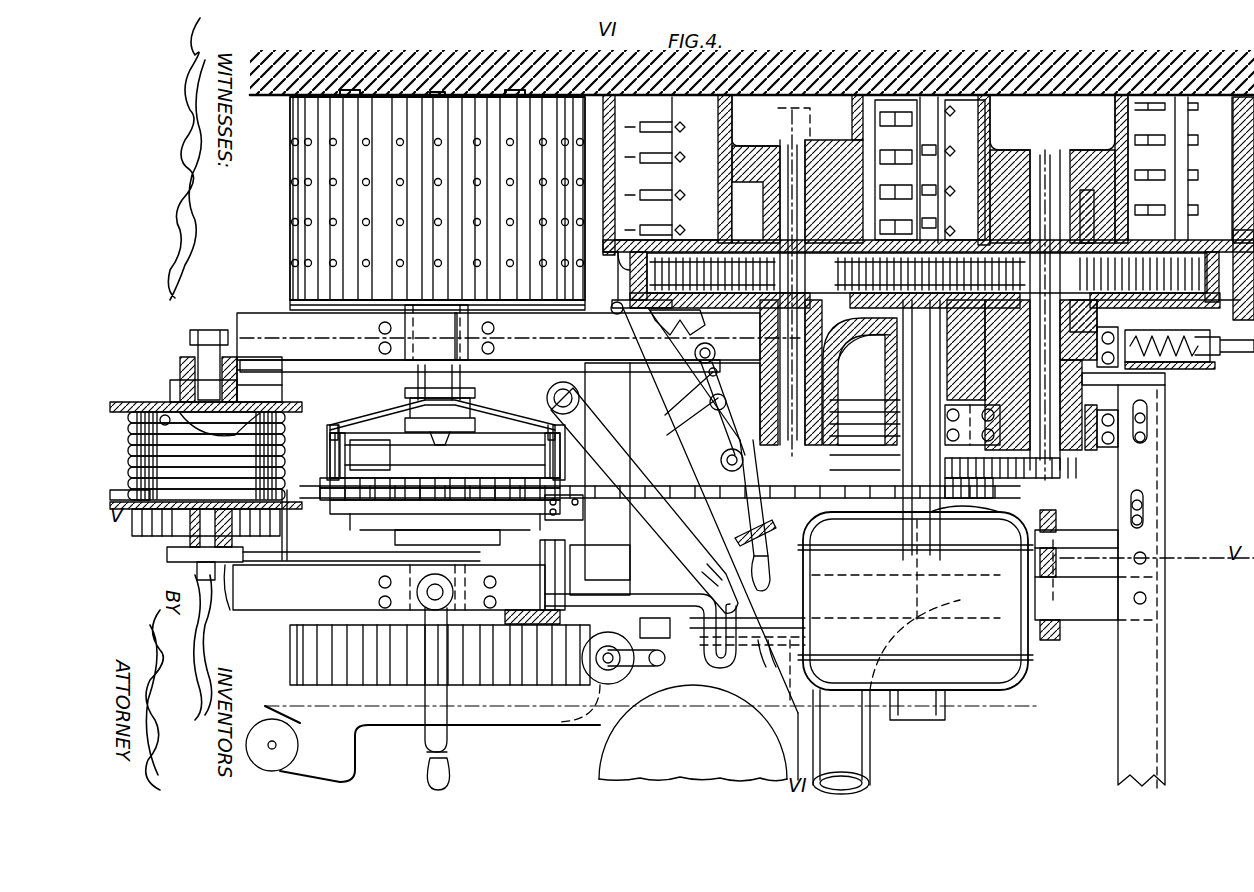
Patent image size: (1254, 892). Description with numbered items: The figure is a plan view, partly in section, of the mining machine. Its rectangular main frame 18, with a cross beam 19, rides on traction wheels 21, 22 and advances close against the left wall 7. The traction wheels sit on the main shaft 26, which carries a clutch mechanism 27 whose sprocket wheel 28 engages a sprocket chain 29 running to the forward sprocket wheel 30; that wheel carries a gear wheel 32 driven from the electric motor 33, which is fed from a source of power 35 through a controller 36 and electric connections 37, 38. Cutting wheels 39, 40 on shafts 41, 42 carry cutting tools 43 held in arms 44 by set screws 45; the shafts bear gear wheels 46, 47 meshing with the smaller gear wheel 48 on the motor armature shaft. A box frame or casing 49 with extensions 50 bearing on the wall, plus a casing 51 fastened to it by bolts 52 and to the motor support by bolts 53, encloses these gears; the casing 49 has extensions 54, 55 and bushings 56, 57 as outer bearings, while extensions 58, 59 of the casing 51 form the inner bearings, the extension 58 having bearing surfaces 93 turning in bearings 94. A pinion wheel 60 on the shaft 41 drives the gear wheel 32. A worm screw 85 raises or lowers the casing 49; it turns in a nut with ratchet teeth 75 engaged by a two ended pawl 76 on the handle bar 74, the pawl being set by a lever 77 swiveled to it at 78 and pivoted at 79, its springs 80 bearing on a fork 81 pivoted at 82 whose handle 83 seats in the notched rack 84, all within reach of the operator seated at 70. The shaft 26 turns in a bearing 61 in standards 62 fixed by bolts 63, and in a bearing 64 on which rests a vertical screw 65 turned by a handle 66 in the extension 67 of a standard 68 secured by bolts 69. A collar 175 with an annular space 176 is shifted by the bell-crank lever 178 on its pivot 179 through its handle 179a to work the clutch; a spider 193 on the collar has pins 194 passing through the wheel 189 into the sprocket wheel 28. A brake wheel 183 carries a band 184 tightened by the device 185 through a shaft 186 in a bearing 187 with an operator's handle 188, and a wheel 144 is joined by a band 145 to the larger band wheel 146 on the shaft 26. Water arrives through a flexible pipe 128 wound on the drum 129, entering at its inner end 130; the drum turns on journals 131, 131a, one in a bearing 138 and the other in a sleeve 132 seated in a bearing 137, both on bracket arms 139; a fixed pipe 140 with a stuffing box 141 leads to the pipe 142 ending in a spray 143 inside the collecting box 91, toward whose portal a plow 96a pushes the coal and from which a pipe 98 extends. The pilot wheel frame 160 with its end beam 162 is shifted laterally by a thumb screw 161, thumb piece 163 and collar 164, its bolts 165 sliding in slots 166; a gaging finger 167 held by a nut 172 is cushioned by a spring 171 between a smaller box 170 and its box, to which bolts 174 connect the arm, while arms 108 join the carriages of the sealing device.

The left wall 7 is at (518, 88).
The extension 50 is at (605, 100).
The box frame or casing 49 is at (630, 272).
The worm screw 85 is at (927, 273).
The bolts 174 is at (1149, 277).
The cutting tools 43 is at (900, 100).
The set screws 45 is at (948, 110).
The arms 44 is at (1202, 124).
The gear wheel 47 is at (705, 243).
The smaller gear wheel 48 is at (945, 243).
The cutting wheel 40 is at (749, 169).
The shaft 42 is at (795, 150).
The bushing 57 is at (775, 190).
The extension 55 is at (745, 218).
The spray 143 is at (893, 170).
The plow 96a is at (850, 110).
The cutting wheel 39 is at (1115, 116).
The shaft 41 is at (1040, 150).
The gear wheel 46 is at (1150, 260).
The bushing 56 is at (1078, 196).
The extension 54 is at (1078, 218).
The extension 58 is at (1135, 378).
The smaller box 170 is at (1210, 365).
The spring 171 is at (1123, 381).
The gaging finger 167 is at (1229, 403).
The laterally extending arms 108 is at (1150, 740).
The bolts 165 is at (1150, 420).
The slots 166 is at (1150, 440).
The bearing surfaces 93 is at (1115, 445).
The bearings 94 is at (1110, 450).
The gear wheel 32 is at (1000, 482).
The pinion wheel 60 is at (1065, 488).
The extension 59 is at (749, 383).
The bolts 53 is at (828, 372).
The collecting box 91 is at (865, 436).
The fork 81 is at (770, 470).
The casing 51 is at (620, 300).
The ratchet teeth 75 is at (655, 340).
The bolts 52 is at (655, 330).
The bearing 61 is at (650, 315).
The bolts 63 is at (360, 338).
The standards 62 is at (449, 332).
The pipe 142 is at (295, 318).
The main shaft 26 is at (470, 370).
The pipe 140 is at (205, 332).
The stuffing box 141 is at (185, 360).
The journal 131 is at (180, 365).
The drum 129 is at (175, 398).
The bearing 138 is at (265, 358).
The inner end 130 is at (210, 426).
The flexible pipe 128 is at (206, 456).
The bearing 137 is at (167, 552).
The sleeve 132 is at (197, 568).
The journal 131a is at (230, 575).
The bracket arms 139 is at (275, 562).
The wheel 144 is at (270, 612).
The standard 68 is at (378, 586).
The bolts 69 is at (378, 600).
The upper vertical extension 67 is at (420, 598).
The vertical screw 65 is at (428, 605).
The handle 66 is at (428, 762).
The bearing 64 is at (475, 628).
The traction wheel 22 is at (310, 658).
The source of power 35 is at (285, 750).
The electric connections 37 is at (500, 730).
The controller 36 is at (600, 690).
The operator's handle 188 is at (675, 624).
The shaft 186 is at (545, 585).
The bearing 187 is at (600, 570).
The tightening device 185 is at (585, 512).
The larger band wheel 146 is at (465, 557).
The band 145 is at (300, 557).
The brake wheel 183 is at (335, 512).
The band 184 is at (440, 499).
The wheel 189 is at (445, 455).
The pins 194 is at (370, 455).
The clutch mechanism 27 is at (330, 455).
The sprocket wheel 28 is at (560, 468).
The collar 175 is at (415, 380).
The central annular space 176 is at (400, 398).
The spider 193 is at (360, 418).
The nut 172 is at (455, 425).
The bell-crank lever 178 is at (548, 400).
The cross beam 19 is at (655, 488).
The pivot 179 is at (578, 392).
The two ended pawl 76 is at (694, 374).
The swivel 78 is at (690, 407).
The springs 80 is at (720, 462).
The lever 77 is at (647, 435).
The pivot 79 is at (659, 463).
The pivot 82 is at (728, 480).
The handle 83 is at (775, 524).
The notched rack 84 is at (712, 548).
The handle bar 74 is at (766, 560).
The handle 179a is at (776, 584).
The electric connections 38 is at (719, 699).
The operator's seat 70 is at (693, 733).
The sprocket wheel 30 is at (925, 530).
The sprocket chain 29 is at (870, 510).
The thumb screw 161 is at (1020, 585).
The collar 164 is at (1018, 615).
The electric motor 33 is at (975, 680).
The pipe 98 is at (870, 778).
The thumb piece 163 is at (1048, 640).
The main frame 18 is at (1088, 615).
The end beam 162 is at (1092, 565).
The frame 160 is at (1150, 560).
The traction wheel 21 is at (292, 200).